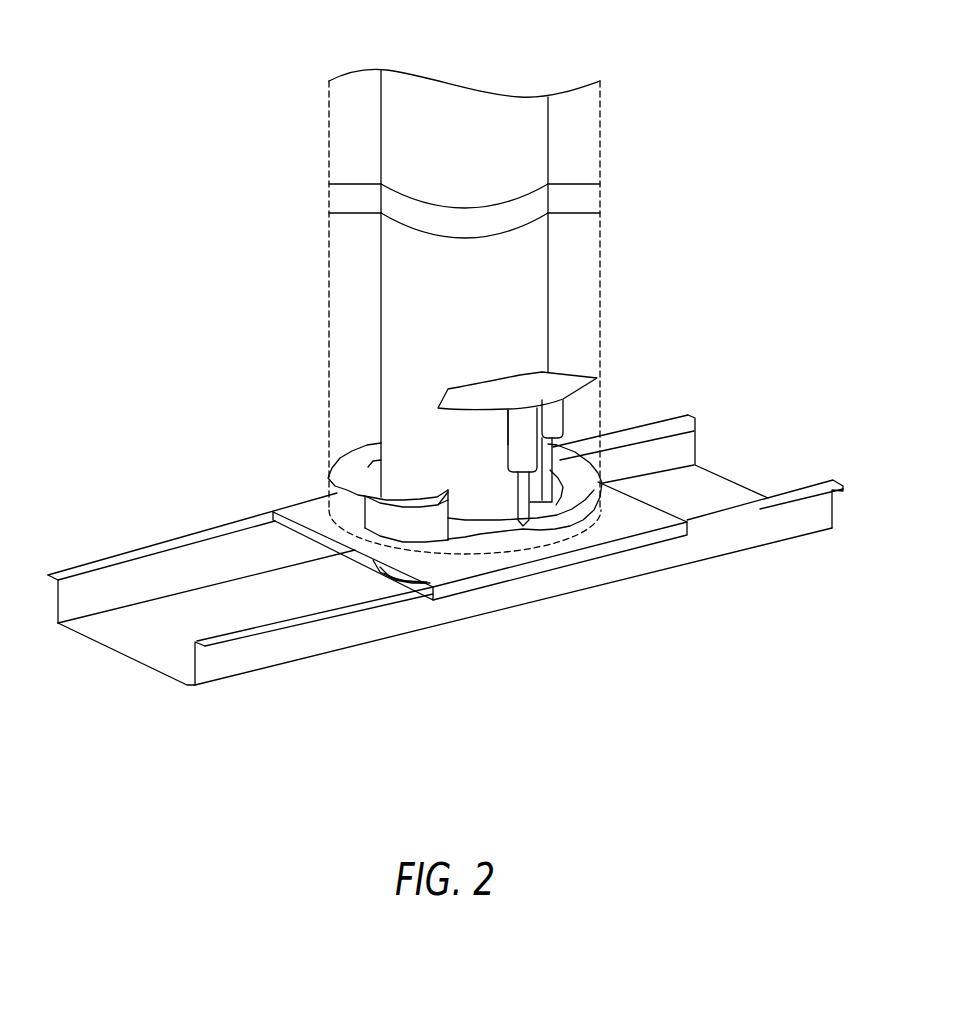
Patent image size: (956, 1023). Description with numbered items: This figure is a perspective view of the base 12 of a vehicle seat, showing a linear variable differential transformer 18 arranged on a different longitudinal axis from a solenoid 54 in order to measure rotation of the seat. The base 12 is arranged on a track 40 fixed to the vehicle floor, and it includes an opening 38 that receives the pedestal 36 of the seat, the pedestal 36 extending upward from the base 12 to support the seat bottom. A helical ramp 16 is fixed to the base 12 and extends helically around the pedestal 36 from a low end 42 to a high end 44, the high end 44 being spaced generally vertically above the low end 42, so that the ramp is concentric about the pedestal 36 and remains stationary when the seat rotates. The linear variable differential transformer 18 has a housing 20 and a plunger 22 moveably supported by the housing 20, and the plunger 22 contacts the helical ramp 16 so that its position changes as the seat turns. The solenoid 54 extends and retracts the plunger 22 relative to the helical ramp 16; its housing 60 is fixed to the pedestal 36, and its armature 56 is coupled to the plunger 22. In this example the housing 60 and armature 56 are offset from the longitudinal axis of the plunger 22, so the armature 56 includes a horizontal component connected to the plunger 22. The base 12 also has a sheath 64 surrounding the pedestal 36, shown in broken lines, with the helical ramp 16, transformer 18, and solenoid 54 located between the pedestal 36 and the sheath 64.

The base 12 is at (640, 523).
The helical ramp 16 is at (351, 477).
The linear variable differential transformer 18 is at (507, 417).
The housing 20 is at (525, 443).
The plunger 22 is at (523, 527).
The pedestal 36 is at (472, 110).
The opening 38 is at (372, 532).
The track 40 is at (770, 523).
The low end 42 is at (445, 538).
The high end 44 is at (448, 498).
The solenoid 54 is at (600, 378).
The armature 56 is at (650, 438).
The housing 60 is at (553, 425).
The sheath 64 is at (601, 153).